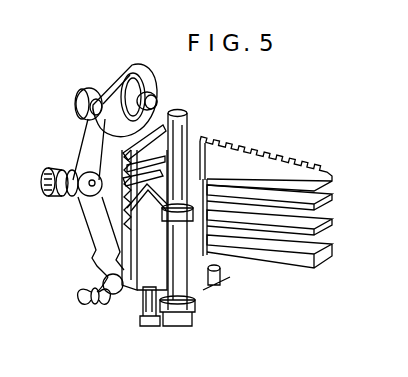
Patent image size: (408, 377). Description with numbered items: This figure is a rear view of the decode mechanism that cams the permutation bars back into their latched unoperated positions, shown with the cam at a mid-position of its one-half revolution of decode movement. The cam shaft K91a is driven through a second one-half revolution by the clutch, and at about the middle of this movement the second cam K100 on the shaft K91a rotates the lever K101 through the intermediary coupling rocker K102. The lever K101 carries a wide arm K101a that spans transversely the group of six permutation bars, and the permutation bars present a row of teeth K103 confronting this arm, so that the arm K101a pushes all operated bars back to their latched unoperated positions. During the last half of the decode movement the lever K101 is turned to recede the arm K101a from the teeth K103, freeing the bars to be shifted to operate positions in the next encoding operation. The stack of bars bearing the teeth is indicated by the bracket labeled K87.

The second cam K100 is at (122, 72).
The cam shaft K91a is at (158, 106).
The wide arm K101a is at (203, 174).
The teeth K103 is at (220, 184).
The plate stack K87 is at (340, 159).
The coupling rocker K102 is at (100, 219).
The lever K101 is at (148, 258).